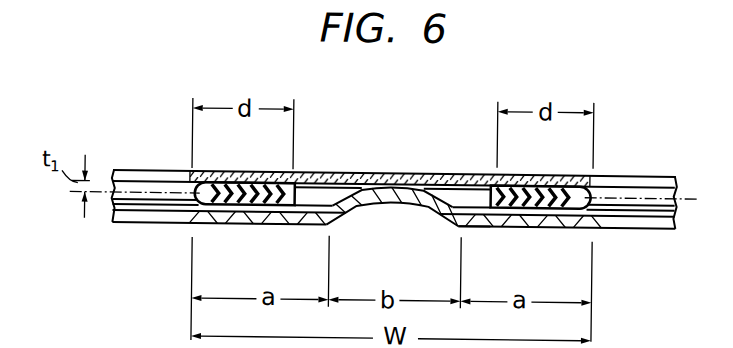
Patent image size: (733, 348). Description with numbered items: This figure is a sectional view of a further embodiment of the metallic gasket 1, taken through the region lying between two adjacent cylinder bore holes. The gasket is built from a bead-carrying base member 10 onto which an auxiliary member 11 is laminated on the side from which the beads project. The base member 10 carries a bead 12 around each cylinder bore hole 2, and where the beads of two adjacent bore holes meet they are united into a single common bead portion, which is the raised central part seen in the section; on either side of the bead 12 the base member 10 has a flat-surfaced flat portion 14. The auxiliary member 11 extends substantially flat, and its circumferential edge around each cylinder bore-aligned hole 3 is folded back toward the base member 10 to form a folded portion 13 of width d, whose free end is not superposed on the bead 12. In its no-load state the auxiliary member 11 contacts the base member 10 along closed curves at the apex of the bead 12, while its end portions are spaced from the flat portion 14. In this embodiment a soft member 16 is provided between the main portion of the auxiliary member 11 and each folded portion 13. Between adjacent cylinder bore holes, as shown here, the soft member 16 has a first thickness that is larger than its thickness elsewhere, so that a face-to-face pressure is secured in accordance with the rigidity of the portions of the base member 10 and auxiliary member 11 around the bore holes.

The metallic gasket 1 is at (403, 164).
The cylinder bore hole 2 is at (180, 223).
The cylinder bore-aligned hole 3 is at (184, 169).
The bead-carrying base member 10 is at (481, 225).
The auxiliary member 11 is at (443, 164).
The bead 12 is at (393, 189).
The folded portion 13 is at (238, 216).
The flat portion 14 is at (304, 216).
The soft member 16 is at (234, 180).